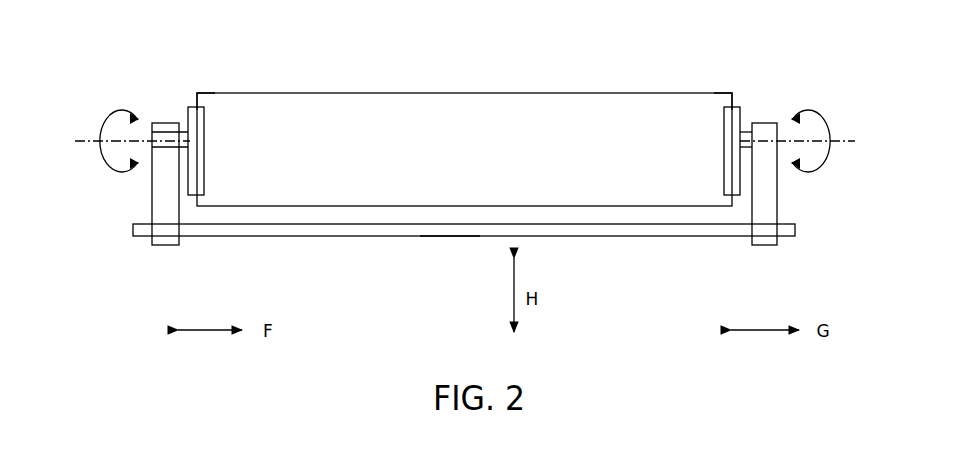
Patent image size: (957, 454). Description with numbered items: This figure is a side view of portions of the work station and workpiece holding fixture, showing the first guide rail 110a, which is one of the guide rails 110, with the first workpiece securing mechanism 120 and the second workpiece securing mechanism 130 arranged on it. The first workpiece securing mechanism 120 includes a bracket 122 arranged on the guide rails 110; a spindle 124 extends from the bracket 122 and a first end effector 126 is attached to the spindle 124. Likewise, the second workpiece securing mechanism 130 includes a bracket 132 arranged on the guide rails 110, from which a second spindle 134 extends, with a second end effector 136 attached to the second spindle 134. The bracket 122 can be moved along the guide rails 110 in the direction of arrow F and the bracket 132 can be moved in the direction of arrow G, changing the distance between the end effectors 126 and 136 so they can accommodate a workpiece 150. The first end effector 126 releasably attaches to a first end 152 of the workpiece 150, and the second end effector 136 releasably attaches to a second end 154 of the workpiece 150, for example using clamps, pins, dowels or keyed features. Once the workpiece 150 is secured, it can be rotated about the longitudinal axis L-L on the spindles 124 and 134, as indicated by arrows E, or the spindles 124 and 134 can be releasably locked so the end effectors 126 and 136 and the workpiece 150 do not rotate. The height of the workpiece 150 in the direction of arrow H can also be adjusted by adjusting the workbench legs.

The guide rails 110 is at (377, 242).
The first guide rail 110a is at (452, 237).
The first workpiece securing mechanism 120 is at (152, 152).
The bracket 122 is at (165, 245).
The spindle 124 is at (185, 133).
The first end effector 126 is at (192, 107).
The second workpiece securing mechanism 130 is at (797, 153).
The bracket 132 is at (766, 245).
The second spindle 134 is at (746, 136).
The second end effector 136 is at (737, 107).
The workpiece 150 is at (493, 115).
The first end 152 is at (200, 100).
The second end 154 is at (730, 100).